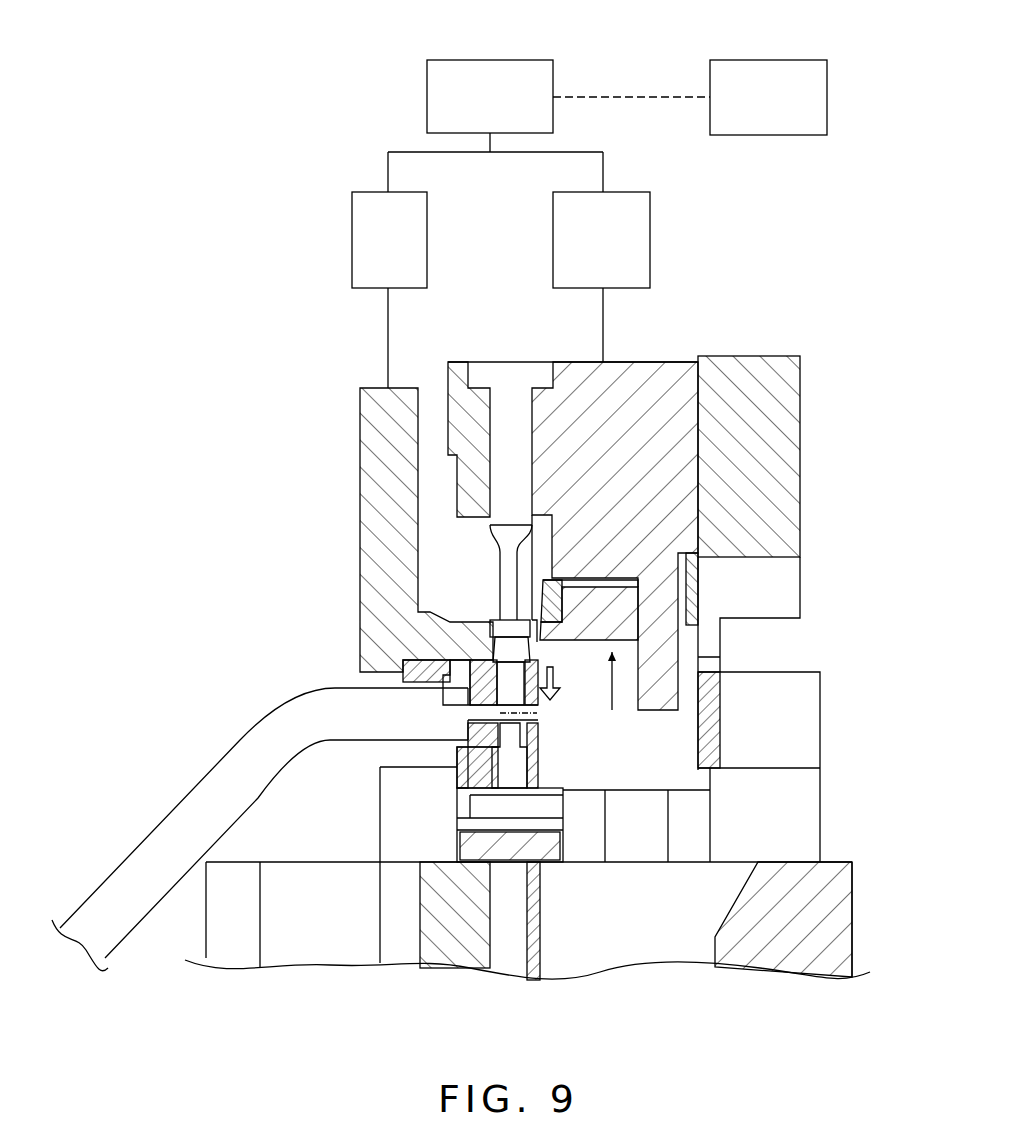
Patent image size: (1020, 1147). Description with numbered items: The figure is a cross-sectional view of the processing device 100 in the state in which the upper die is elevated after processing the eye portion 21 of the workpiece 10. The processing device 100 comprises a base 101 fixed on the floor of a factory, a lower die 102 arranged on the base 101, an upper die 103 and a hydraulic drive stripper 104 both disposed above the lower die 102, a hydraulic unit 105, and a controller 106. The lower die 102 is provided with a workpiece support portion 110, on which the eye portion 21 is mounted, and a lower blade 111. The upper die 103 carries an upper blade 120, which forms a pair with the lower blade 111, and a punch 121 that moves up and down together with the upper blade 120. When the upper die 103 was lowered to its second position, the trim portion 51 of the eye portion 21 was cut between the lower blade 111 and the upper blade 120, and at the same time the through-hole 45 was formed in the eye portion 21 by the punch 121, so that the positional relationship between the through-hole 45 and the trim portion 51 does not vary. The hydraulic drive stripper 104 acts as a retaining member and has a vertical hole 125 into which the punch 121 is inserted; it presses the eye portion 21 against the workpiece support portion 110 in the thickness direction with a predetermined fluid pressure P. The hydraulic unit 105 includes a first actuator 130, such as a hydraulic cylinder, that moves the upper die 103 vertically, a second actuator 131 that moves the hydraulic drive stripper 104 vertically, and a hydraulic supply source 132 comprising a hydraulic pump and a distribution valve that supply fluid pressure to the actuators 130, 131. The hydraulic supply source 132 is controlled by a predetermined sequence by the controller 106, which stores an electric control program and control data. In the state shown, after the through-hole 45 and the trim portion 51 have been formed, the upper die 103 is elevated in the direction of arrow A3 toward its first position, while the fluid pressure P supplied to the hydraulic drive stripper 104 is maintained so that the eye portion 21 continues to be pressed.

The strip material 10 is at (170, 787).
The eye portion 21 is at (537, 722).
The through-hole 45 is at (458, 750).
The trim portion 51 is at (540, 712).
The processing device 100 is at (290, 438).
The base 101 is at (787, 978).
The lower die 102 is at (467, 777).
The upper die 103 is at (637, 372).
The hydraulic drive stripper 104 is at (403, 677).
The hydraulic unit 105 is at (720, 251).
The controller 106 is at (766, 77).
The workpiece support portion 110 is at (470, 742).
The lower blade 111 is at (540, 745).
The upper blade 120 is at (550, 600).
The punch 121 is at (503, 577).
The vertical hole 125 is at (470, 700).
The first actuator 130 is at (553, 243).
The second actuator 131 is at (352, 243).
The hydraulic supply source 132 is at (427, 98).
The fluid pressure P is at (556, 686).
The arrow A3 is at (614, 692).